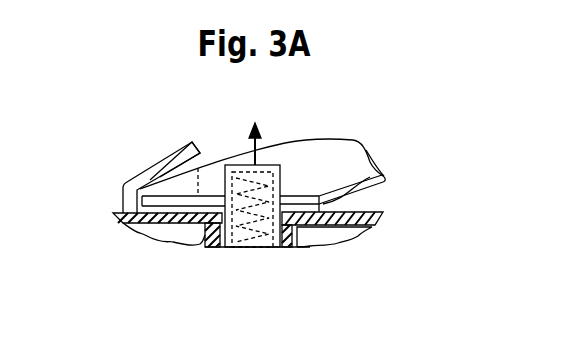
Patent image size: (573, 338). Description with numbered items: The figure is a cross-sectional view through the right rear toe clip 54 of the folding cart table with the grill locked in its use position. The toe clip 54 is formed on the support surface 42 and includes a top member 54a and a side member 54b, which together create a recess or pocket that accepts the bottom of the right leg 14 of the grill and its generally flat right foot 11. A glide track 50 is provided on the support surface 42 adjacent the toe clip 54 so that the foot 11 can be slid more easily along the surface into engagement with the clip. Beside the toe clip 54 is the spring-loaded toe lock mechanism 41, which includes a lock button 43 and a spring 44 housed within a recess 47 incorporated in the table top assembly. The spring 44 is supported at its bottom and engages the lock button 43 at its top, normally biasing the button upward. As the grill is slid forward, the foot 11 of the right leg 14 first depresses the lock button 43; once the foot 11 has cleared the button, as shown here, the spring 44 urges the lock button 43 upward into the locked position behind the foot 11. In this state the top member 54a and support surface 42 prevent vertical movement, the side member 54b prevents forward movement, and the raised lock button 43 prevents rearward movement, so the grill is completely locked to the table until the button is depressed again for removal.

The right foot 11 is at (165, 209).
The right leg 14 is at (333, 152).
The toe lock mechanism 41 is at (290, 228).
The support surface 42 is at (357, 211).
The lock button 43 is at (280, 179).
The spring 44 is at (245, 248).
The recess 47 is at (205, 233).
The glide track 50 is at (369, 162).
The right rear toe clip 54 is at (123, 184).
The top member 54a is at (182, 152).
The side member 54b is at (203, 163).